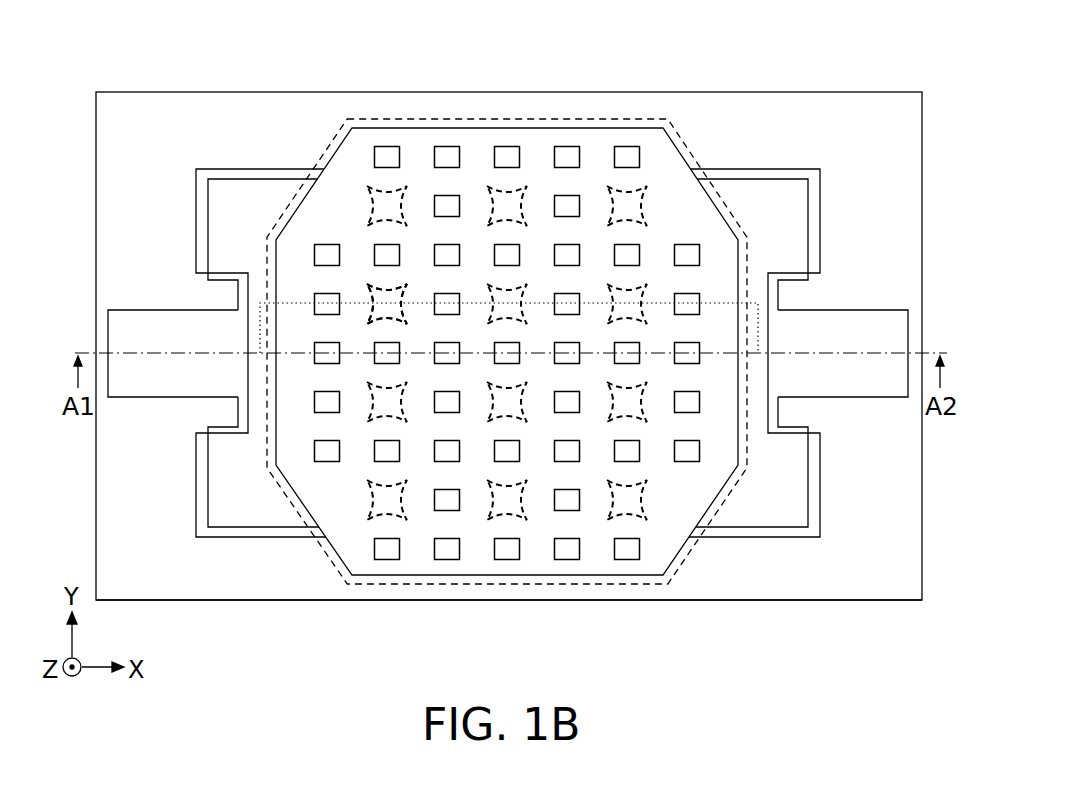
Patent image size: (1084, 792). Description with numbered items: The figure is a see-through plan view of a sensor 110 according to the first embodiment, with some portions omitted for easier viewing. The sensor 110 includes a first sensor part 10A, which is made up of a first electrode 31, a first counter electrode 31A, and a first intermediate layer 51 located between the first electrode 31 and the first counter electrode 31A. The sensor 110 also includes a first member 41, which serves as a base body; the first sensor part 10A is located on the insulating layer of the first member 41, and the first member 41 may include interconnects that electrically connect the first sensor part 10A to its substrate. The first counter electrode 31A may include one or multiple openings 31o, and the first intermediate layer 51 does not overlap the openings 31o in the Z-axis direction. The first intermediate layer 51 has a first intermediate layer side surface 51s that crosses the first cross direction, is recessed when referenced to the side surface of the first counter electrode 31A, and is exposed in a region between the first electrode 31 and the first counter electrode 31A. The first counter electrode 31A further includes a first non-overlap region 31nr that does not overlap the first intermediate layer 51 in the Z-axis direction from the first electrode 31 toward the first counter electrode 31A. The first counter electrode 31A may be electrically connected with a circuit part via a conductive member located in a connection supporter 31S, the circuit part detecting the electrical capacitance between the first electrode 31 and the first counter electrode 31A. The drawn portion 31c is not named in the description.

The first sensor part 10A is at (770, 79).
The sensor 110 is at (870, 81).
The first member 41 is at (242, 600).
The first electrode 31 is at (377, 588).
The first counter electrode 31A is at (328, 152).
The connection portion of electrode 31c is at (265, 177).
The connection supporter 31S is at (177, 308).
The openings 31o is at (458, 300).
The first intermediate layer 51 is at (403, 278).
The first intermediate layer side surface 51s is at (413, 312).
The first non-overlap region 31nr is at (415, 310).